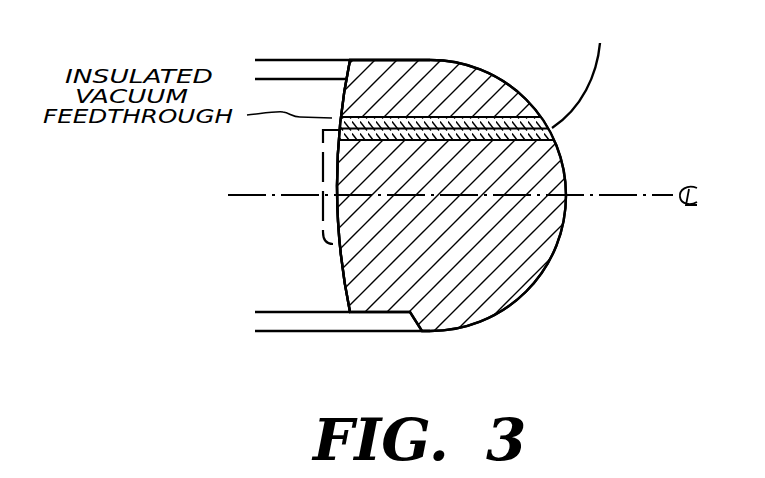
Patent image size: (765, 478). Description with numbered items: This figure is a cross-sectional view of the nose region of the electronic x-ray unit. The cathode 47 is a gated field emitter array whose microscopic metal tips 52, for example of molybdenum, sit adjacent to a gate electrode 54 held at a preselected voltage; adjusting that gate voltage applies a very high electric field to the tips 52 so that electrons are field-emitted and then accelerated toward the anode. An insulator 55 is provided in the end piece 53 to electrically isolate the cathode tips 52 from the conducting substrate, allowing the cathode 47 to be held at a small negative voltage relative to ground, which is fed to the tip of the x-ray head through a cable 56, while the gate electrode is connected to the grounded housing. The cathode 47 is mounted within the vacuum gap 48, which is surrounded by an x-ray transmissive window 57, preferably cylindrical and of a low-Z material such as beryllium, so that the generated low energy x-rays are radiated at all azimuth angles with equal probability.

The cathode 47 is at (313, 153).
The vacuum gap 48 is at (192, 200).
The metal tips 52 is at (323, 244).
The end piece 53 is at (492, 289).
The gate electrode 54 is at (318, 185).
The insulator 55 is at (554, 133).
The cable 56 is at (596, 55).
The x-ray transmissive window 57 is at (298, 68).